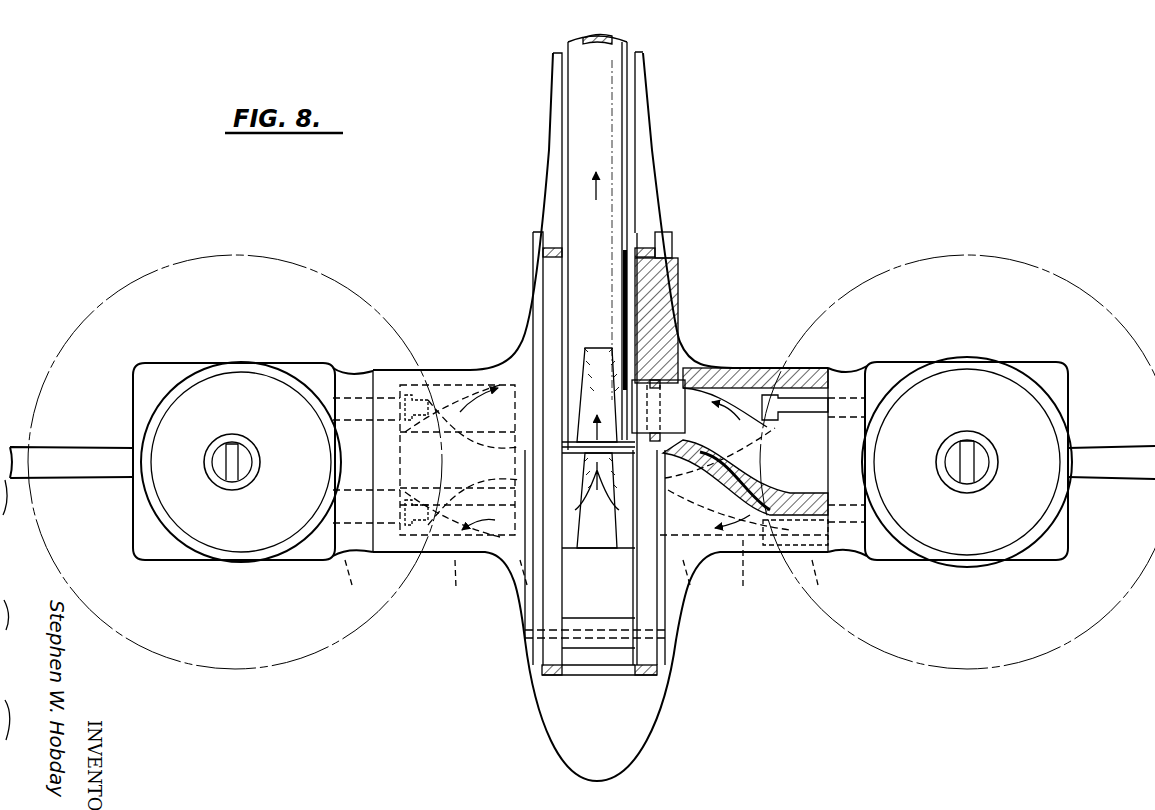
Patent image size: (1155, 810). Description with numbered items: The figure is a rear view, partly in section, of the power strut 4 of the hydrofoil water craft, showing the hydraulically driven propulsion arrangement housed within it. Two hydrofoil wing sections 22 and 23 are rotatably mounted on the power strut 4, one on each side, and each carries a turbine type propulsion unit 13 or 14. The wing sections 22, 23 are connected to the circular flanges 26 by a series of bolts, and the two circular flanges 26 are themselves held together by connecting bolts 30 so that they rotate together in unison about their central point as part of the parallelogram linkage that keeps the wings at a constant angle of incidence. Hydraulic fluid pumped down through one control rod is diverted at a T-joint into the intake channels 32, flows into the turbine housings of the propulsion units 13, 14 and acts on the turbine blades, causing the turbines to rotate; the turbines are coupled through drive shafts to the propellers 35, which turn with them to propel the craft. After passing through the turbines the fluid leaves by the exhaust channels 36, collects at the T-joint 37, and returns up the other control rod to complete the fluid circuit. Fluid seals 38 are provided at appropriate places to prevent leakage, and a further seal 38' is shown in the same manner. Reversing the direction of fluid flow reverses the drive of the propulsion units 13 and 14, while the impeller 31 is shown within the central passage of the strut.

The power strut 4 is at (638, 115).
The turbine type propulsion unit 13 is at (992, 395).
The turbine type propulsion unit 14 is at (278, 384).
The hydrofoil wing section 22 is at (278, 570).
The hydrofoil wing section 23 is at (970, 602).
The circular flange 26 is at (540, 275).
The connecting bolt 30 is at (527, 640).
The lower impeller 31 is at (605, 537).
The intake channel 32 is at (455, 566).
The propeller 35 is at (63, 390).
The exhaust channel 36 is at (468, 383).
The T-joint 37 is at (600, 383).
The fluid seal 38 is at (609, 448).
The fastening bolt 38' is at (590, 472).